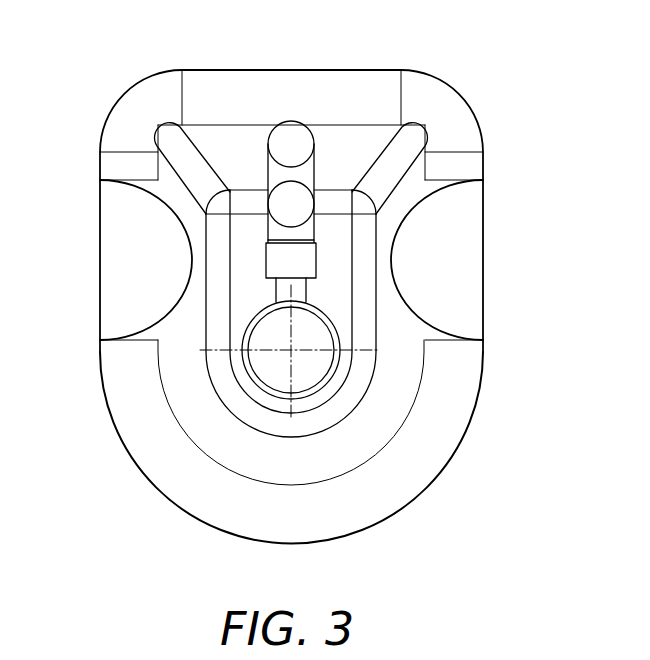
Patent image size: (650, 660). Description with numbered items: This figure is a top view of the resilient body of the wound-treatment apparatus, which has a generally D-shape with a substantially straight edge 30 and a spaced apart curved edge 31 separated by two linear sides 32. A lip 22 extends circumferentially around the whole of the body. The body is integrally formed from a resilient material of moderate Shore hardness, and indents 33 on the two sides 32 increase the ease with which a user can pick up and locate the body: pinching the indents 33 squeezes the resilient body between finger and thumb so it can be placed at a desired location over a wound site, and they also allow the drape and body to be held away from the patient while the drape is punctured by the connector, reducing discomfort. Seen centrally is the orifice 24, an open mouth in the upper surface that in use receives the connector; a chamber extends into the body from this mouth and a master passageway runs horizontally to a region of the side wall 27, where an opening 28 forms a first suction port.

The lip 22 is at (292, 80).
The orifice 24 is at (305, 367).
The side wall 27 is at (249, 140).
The opening 28 is at (294, 143).
The straight edge 30 is at (374, 70).
The curved edge 31 is at (397, 529).
The linear sides 32 is at (80, 227).
The indents 33 is at (113, 256).